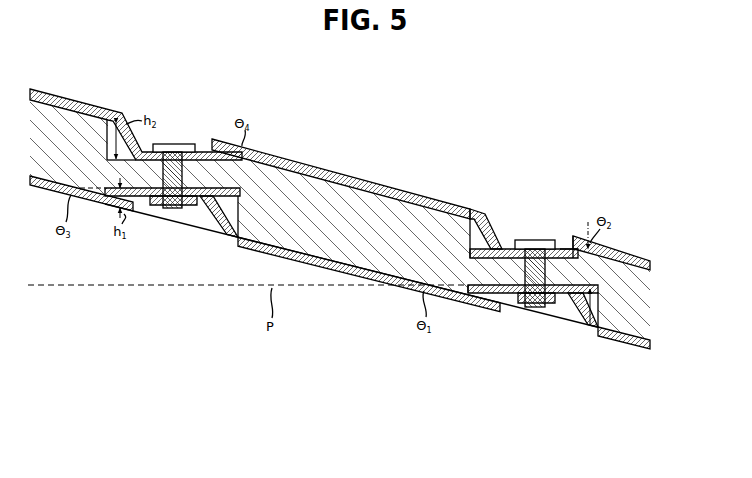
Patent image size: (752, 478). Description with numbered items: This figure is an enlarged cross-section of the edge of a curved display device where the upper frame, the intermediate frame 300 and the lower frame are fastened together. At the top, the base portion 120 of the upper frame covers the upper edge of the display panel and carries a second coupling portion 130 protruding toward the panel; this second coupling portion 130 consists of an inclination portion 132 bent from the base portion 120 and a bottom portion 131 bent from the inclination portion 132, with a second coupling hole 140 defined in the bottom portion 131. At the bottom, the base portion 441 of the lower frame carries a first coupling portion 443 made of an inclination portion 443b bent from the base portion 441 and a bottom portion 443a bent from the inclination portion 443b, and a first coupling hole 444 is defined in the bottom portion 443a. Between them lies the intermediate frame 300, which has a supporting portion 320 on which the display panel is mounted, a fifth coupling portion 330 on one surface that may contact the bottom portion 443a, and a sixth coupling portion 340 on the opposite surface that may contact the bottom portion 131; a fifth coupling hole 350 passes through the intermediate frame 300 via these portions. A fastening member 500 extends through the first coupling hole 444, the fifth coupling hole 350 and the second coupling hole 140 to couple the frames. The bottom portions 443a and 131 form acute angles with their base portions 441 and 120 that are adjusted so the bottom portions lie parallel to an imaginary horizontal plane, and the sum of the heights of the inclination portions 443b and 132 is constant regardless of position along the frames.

The base portion 120 is at (651, 258).
The second coupling portion 130 is at (519, 194).
The bottom portion 131 is at (505, 248).
The inclination portion 132 is at (486, 214).
The second coupling hole 140 is at (543, 239).
The intermediate frame 300 is at (638, 294).
The supporting portion 320 is at (566, 247).
The fifth coupling portion 330 is at (590, 329).
The sixth coupling portion 340 is at (583, 238).
The fifth coupling hole 350 is at (534, 262).
The base portion 441 is at (644, 341).
The first coupling portion 443 is at (513, 373).
The bottom portion 443a is at (520, 304).
The inclination portion 443b is at (505, 304).
The first coupling hole 444 is at (534, 308).
The fastening member 500 is at (552, 304).